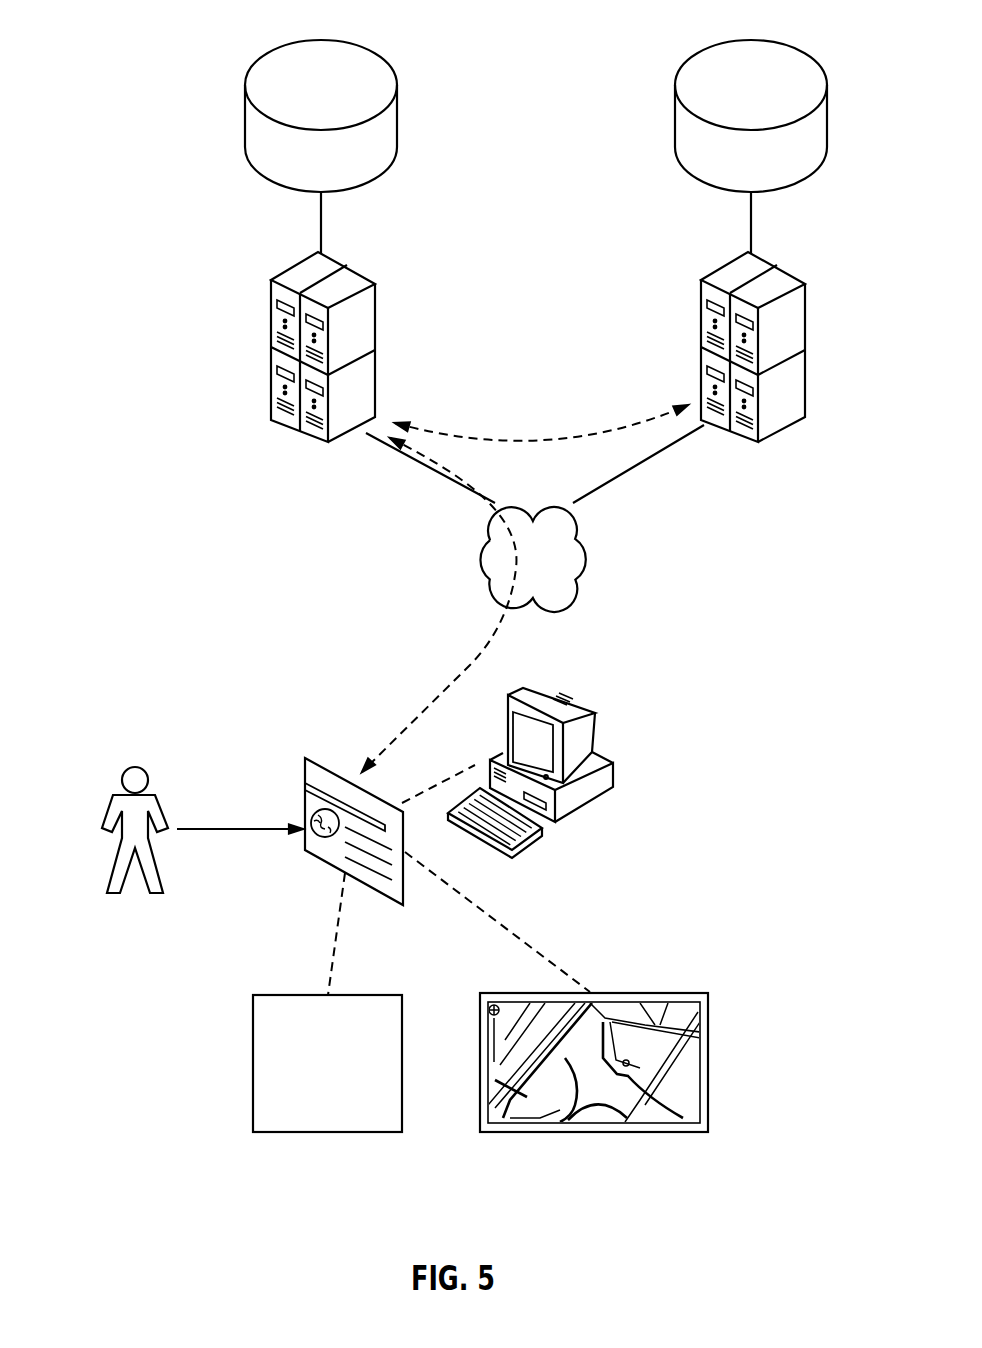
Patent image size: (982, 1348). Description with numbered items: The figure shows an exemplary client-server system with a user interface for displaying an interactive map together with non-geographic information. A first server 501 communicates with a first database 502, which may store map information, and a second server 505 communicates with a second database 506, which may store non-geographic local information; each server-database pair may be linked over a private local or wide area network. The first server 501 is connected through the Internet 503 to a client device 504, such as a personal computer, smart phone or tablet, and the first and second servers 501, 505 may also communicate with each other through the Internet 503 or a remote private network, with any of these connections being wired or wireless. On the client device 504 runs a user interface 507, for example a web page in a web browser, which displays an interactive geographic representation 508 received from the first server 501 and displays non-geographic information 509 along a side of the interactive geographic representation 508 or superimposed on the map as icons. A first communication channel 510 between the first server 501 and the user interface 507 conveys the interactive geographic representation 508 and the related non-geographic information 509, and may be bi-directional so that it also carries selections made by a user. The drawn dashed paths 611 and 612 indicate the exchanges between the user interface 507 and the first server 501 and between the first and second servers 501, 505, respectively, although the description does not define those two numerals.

The first server 501 is at (352, 287).
The first database 502 is at (341, 60).
The Internet 503 is at (605, 588).
The client device 504 is at (597, 733).
The second server 505 is at (782, 287).
The second database 506 is at (771, 60).
The user interface 507 is at (302, 768).
The interactive geographic representation 508 is at (663, 993).
The non-geographic information 509 is at (253, 1063).
The first communication channel 510 is at (122, 782).
The request/response communication path 611 is at (457, 677).
The server-to-server communication path 612 is at (550, 438).